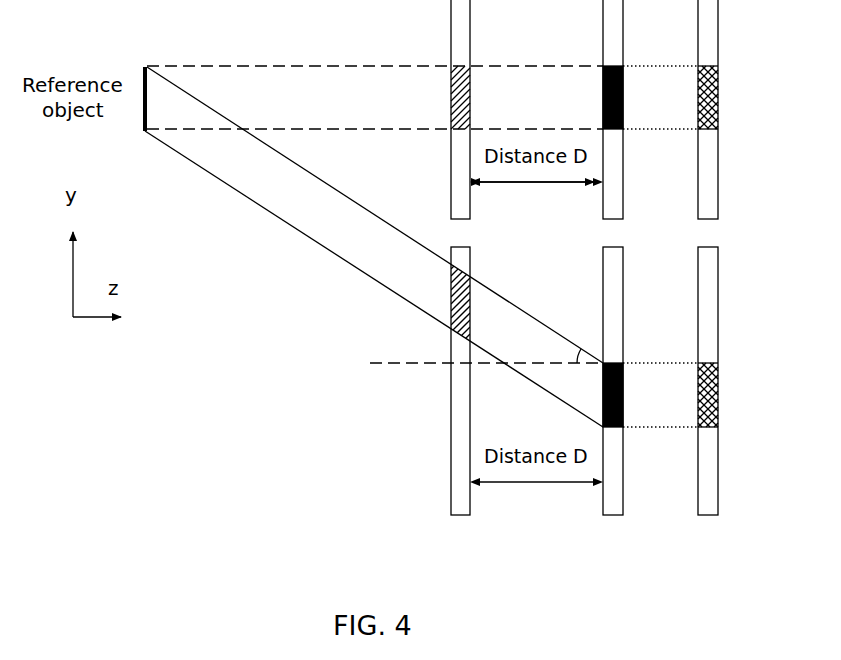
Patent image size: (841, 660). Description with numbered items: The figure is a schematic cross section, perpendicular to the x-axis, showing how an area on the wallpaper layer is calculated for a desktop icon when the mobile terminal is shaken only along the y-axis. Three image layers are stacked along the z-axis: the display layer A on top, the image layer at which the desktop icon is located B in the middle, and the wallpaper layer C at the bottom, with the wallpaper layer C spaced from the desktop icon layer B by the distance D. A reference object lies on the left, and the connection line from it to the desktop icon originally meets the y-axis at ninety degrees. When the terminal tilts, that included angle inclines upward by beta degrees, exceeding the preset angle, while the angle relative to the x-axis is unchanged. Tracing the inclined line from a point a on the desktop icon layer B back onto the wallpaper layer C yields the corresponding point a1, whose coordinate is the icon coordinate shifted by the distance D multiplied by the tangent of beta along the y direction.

The display layer A is at (708, 281).
The image layer at which the desktop icon is located B is at (613, 281).
The wallpaper layer C is at (459, 281).
The point on the desktop icon a is at (628, 374).
The corresponding point at the wallpaper layer a1 is at (482, 294).